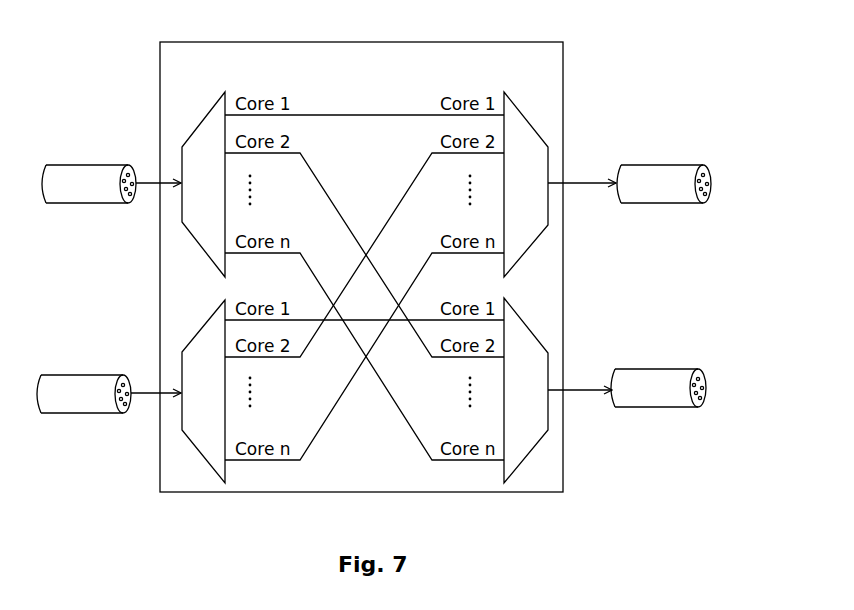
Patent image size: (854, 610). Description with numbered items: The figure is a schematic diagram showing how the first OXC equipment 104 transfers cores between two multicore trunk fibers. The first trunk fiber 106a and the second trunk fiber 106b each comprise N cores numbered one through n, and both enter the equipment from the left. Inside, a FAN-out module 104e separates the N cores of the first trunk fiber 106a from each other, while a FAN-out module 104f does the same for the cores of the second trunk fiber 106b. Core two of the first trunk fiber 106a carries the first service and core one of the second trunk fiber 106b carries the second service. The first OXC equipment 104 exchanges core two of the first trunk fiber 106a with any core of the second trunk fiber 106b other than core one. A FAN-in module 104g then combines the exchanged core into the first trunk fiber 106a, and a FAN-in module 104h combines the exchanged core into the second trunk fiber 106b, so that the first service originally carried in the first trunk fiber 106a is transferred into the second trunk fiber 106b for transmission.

The first OXC equipment 104 is at (361, 42).
The FAN-out module 104e is at (203, 115).
The FAN-out module 104f is at (200, 457).
The FAN-in module 104g is at (527, 118).
The FAN-in module 104h is at (527, 458).
The first trunk fiber 106a is at (88, 165).
The second trunk fiber 106b is at (87, 416).